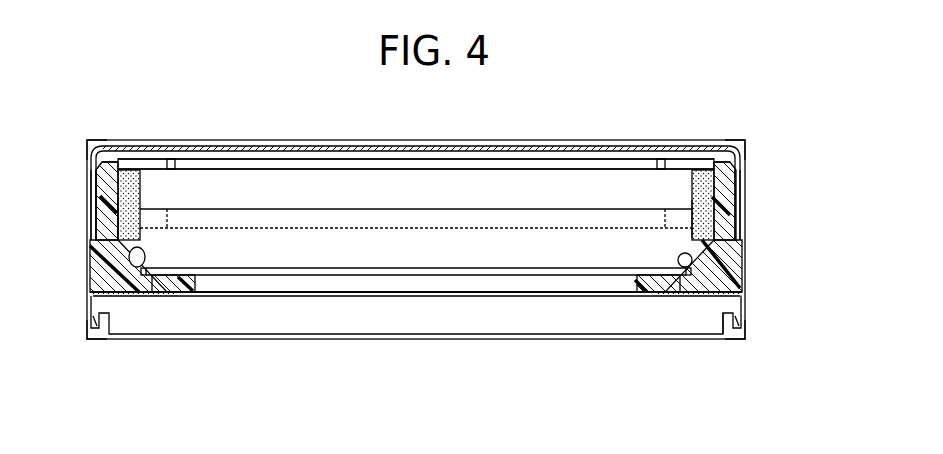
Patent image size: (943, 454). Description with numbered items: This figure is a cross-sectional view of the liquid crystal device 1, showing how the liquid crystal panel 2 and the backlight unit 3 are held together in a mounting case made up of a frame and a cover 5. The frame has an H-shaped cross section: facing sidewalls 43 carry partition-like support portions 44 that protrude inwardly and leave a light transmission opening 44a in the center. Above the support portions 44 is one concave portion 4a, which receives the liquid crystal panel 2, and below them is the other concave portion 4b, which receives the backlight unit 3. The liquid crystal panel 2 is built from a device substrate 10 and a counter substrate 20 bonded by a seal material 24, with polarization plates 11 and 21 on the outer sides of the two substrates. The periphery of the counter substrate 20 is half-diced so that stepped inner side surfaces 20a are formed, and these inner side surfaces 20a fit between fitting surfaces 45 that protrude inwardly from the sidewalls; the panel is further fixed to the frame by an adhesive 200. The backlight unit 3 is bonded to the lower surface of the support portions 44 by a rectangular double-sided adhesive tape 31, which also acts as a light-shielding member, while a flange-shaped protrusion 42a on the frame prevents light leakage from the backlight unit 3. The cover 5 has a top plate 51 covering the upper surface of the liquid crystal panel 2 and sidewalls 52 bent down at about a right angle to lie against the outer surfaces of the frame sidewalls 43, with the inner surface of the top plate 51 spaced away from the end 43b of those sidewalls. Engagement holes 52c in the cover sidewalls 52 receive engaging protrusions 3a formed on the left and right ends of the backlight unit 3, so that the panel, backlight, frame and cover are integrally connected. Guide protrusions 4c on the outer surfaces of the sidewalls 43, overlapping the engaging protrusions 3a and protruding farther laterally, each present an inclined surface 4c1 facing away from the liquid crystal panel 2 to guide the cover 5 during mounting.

The liquid crystal device 1 is at (170, 90).
The liquid crystal panel 2 is at (258, 168).
The backlight unit 3 is at (545, 335).
The engaging protrusion 3a is at (95, 318).
The concave portion 4a is at (128, 190).
The concave portion 4b is at (742, 320).
The guide protrusion 4c is at (95, 292).
The inclined surface 4c1 is at (96, 258).
The cover 5 is at (663, 143).
The device substrate 10 is at (300, 185).
The polarization plate 11 is at (425, 168).
The counter substrate 20 is at (397, 270).
The inner side surface 20a is at (146, 257).
The polarization plate 21 is at (472, 290).
The seal material 24 is at (365, 215).
The double-sided adhesive tape 31 is at (165, 296).
The flange-shaped protrusion 42a is at (82, 140).
The sidewall 43 is at (105, 232).
The end 43b is at (104, 162).
The support portion 44 is at (200, 292).
The light transmission opening 44a is at (298, 283).
The fitting surface 45 is at (137, 292).
The top plate 51 is at (617, 148).
The sidewall 52 is at (93, 176).
The engagement hole 52c is at (92, 205).
The adhesive 200 is at (140, 200).